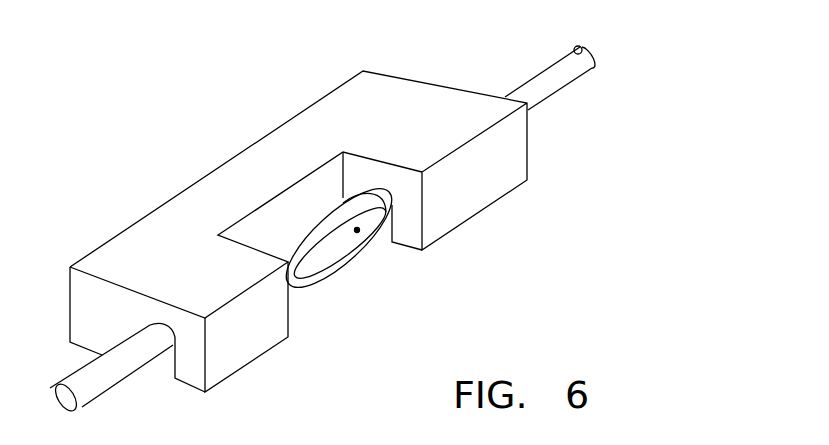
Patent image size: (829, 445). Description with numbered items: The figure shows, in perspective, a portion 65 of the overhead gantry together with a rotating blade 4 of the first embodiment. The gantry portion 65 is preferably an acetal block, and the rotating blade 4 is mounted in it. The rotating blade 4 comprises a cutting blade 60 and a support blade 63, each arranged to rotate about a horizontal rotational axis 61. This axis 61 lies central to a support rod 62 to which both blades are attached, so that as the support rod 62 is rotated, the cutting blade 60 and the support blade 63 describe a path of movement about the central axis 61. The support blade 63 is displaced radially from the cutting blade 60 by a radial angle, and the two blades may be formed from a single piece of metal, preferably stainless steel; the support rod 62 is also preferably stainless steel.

The portion of the overhead gantry 65 is at (162, 230).
The support blade 63 is at (322, 215).
The cutting blade 60 is at (362, 260).
The support rod 62 is at (545, 92).
The horizontal rotational axis 61 is at (600, 52).
The rotating blade 4 is at (343, 292).